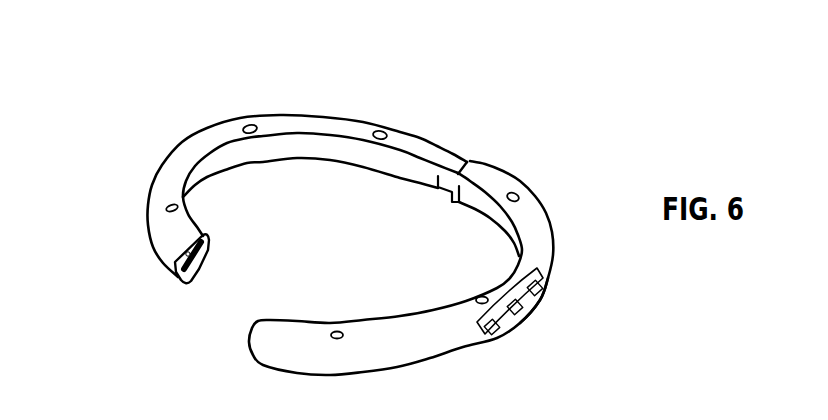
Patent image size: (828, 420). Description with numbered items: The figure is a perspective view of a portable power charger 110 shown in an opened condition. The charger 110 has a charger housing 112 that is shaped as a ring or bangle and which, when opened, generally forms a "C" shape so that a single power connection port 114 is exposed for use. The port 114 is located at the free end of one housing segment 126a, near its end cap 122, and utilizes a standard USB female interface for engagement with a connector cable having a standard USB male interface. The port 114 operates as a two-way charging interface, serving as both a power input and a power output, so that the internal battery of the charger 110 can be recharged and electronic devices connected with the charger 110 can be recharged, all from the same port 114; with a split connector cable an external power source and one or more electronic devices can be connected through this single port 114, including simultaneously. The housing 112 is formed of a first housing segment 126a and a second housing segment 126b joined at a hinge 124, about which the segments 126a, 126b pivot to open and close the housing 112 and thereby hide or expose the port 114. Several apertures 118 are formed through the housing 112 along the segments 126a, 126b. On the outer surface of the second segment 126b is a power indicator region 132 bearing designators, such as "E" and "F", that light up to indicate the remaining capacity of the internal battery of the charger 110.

The portable power charger 110 is at (115, 206).
The charger housing 112 is at (543, 255).
The power connection port 114 is at (202, 262).
The apertures 118 is at (335, 331).
The end cap 122 is at (197, 243).
The hinge 124 is at (483, 147).
The first band segment 126a is at (279, 123).
The second band segment 126b is at (535, 227).
The outer surface indicia region 132 is at (600, 331).